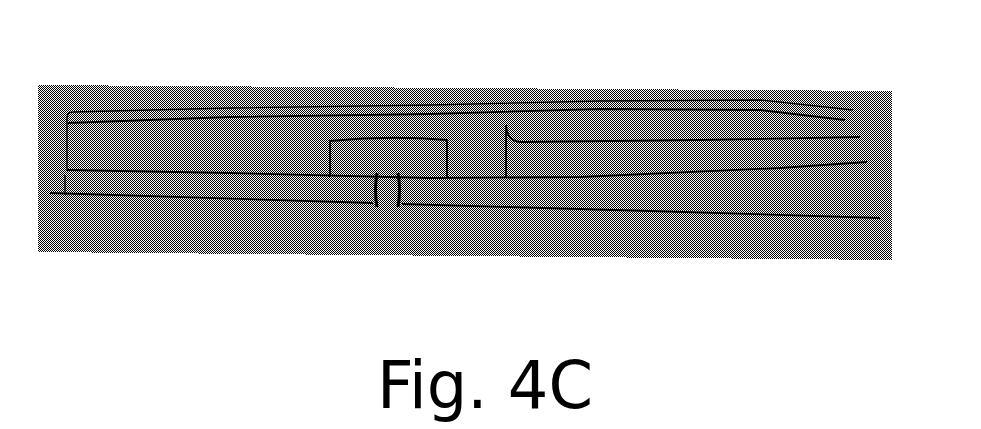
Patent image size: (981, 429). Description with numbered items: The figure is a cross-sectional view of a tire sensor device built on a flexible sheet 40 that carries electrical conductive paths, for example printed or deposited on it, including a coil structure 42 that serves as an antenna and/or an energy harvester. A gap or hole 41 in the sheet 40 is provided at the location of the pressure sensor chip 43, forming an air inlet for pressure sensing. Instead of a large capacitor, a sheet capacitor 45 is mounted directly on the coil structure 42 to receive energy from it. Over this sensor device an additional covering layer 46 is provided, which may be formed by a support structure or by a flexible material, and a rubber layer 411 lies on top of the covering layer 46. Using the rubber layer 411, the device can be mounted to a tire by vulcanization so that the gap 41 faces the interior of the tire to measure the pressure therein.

The flexible sheet 40 is at (178, 180).
The gap or hole 41 is at (388, 195).
The rubber layer 411 is at (352, 112).
The coil structure 42 is at (688, 105).
The pressure sensor chip 43 is at (412, 142).
The sheet capacitor 45 is at (741, 150).
The covering layer 46 is at (212, 145).